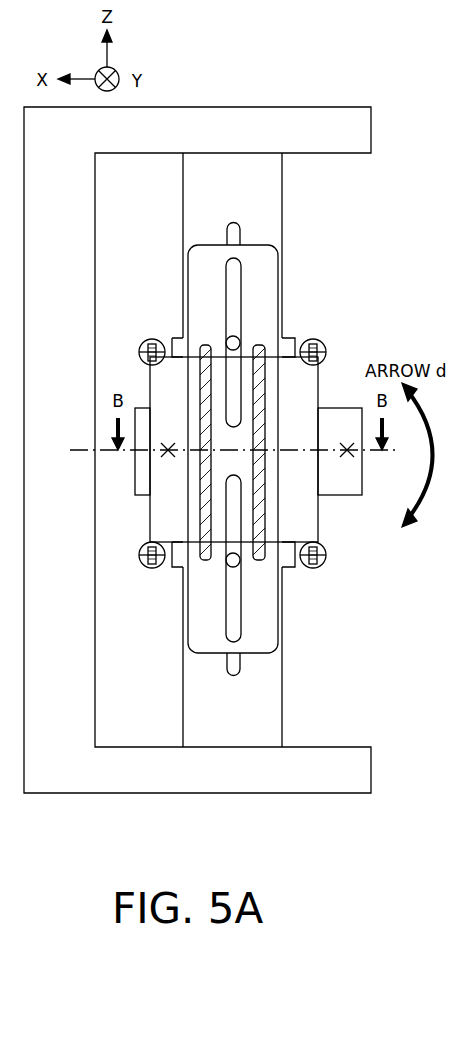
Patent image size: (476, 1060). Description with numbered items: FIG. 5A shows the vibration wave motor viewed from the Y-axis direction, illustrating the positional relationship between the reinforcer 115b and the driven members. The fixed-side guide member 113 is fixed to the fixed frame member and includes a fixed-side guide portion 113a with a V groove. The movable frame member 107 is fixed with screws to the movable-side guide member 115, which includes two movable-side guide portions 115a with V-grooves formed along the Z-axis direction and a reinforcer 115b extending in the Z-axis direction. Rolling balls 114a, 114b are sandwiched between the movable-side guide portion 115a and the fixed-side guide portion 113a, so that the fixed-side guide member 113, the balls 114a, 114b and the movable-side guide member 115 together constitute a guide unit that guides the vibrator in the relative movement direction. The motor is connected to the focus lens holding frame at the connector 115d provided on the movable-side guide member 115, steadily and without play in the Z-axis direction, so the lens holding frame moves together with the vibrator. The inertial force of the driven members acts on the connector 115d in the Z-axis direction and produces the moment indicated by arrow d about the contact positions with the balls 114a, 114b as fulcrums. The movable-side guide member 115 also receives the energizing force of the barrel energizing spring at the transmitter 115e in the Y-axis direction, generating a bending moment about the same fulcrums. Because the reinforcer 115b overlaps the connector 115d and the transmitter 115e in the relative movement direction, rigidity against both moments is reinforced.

The movable frame member 107 is at (330, 498).
The fixed-side guide member 113 is at (278, 190).
The fixed-side guide portion 113a is at (240, 229).
The ball 114a is at (229, 338).
The ball 114b is at (229, 567).
The movable-side guide member 115 is at (266, 263).
The movable-side guide portion 115a is at (235, 315).
The reinforcer 115b is at (262, 393).
The connector 115d is at (349, 457).
The transmitter 115e is at (168, 447).